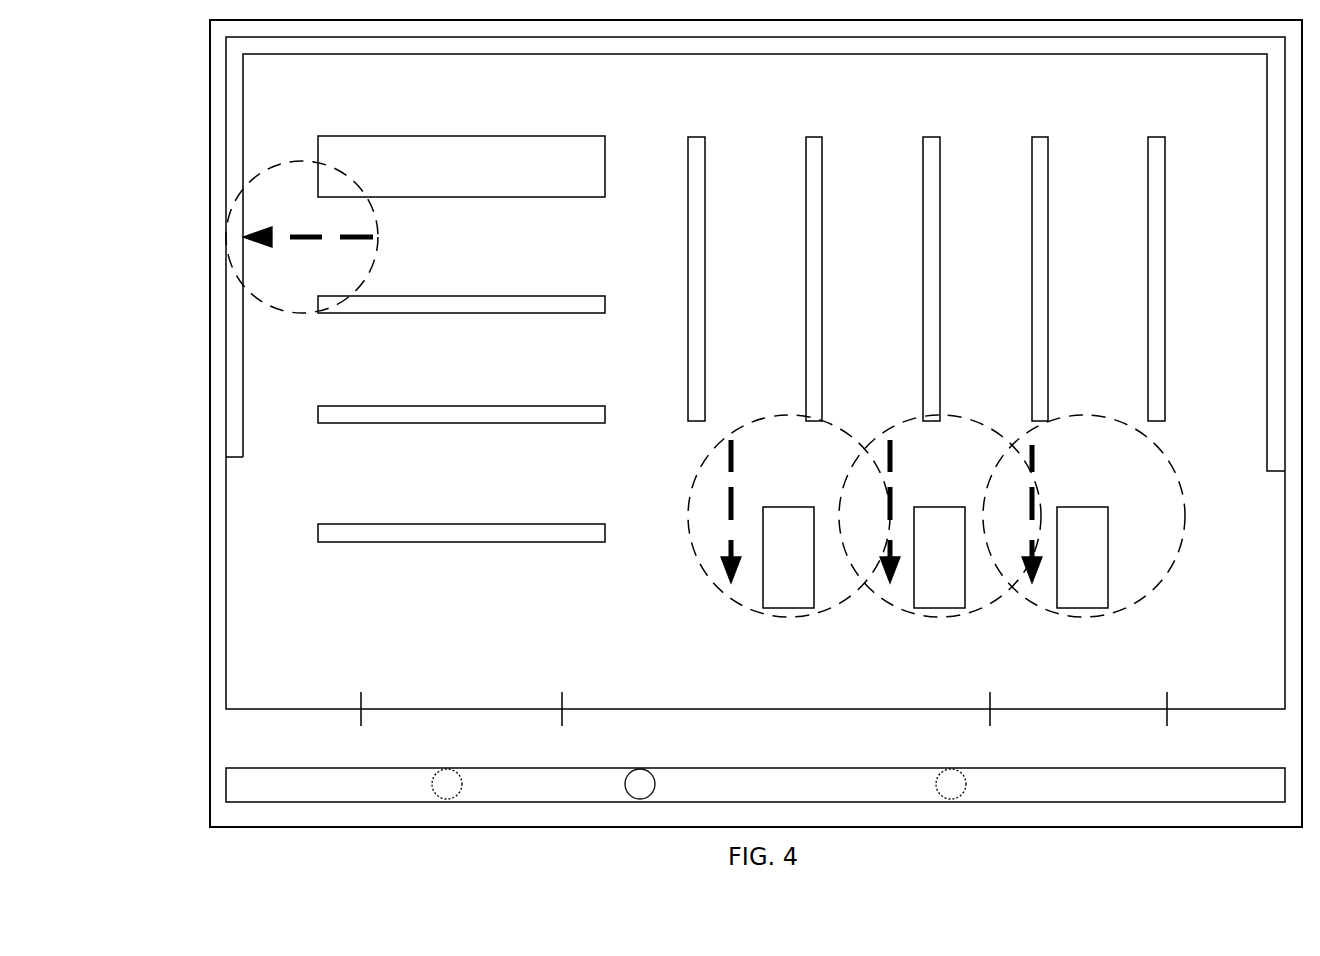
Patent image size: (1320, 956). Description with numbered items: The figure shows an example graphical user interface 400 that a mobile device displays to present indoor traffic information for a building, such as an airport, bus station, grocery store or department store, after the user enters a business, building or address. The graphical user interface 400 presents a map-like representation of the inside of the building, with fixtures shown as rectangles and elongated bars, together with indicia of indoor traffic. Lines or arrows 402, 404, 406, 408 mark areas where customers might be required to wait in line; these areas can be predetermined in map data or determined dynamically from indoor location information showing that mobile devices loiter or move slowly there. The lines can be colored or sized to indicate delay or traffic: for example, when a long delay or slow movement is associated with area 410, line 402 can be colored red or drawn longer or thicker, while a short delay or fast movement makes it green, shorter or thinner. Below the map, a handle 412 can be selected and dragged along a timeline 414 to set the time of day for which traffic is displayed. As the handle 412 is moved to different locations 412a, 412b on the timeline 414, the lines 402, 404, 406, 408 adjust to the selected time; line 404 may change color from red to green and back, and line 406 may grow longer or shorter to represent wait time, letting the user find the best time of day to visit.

The graphical user interface 400 is at (160, 161).
The line 402 is at (300, 241).
The line 404 is at (733, 471).
The line 406 is at (892, 458).
The line 408 is at (1034, 458).
The area 410 is at (292, 315).
The handle 412 is at (639, 798).
The handle location 412a is at (445, 798).
The handle location 412b is at (950, 798).
The timeline 414 is at (1094, 802).